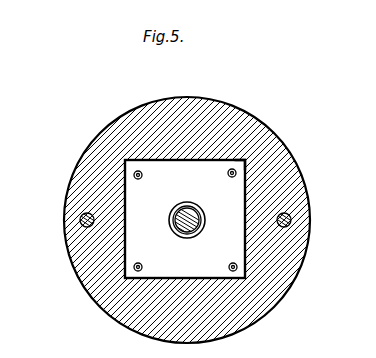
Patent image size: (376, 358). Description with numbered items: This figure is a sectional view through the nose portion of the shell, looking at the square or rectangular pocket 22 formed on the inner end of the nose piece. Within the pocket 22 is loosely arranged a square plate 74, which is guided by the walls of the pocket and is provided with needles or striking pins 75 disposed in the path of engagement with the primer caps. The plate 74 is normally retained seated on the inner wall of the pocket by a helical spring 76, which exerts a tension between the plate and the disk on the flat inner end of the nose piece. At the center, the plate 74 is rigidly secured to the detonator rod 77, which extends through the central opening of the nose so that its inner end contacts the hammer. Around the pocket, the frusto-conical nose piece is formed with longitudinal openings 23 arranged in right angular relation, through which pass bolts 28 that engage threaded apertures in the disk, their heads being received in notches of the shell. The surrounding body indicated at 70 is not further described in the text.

The circular disc body 70 is at (99, 150).
The square or rectangular pocket 22 is at (124, 185).
The longitudinal openings 23 is at (73, 227).
The bolts 28 is at (80, 221).
The square plate 74 is at (240, 184).
The needles or striking pins 75 is at (247, 154).
The helical spring 76 is at (192, 238).
The detonator rod 77 is at (199, 222).